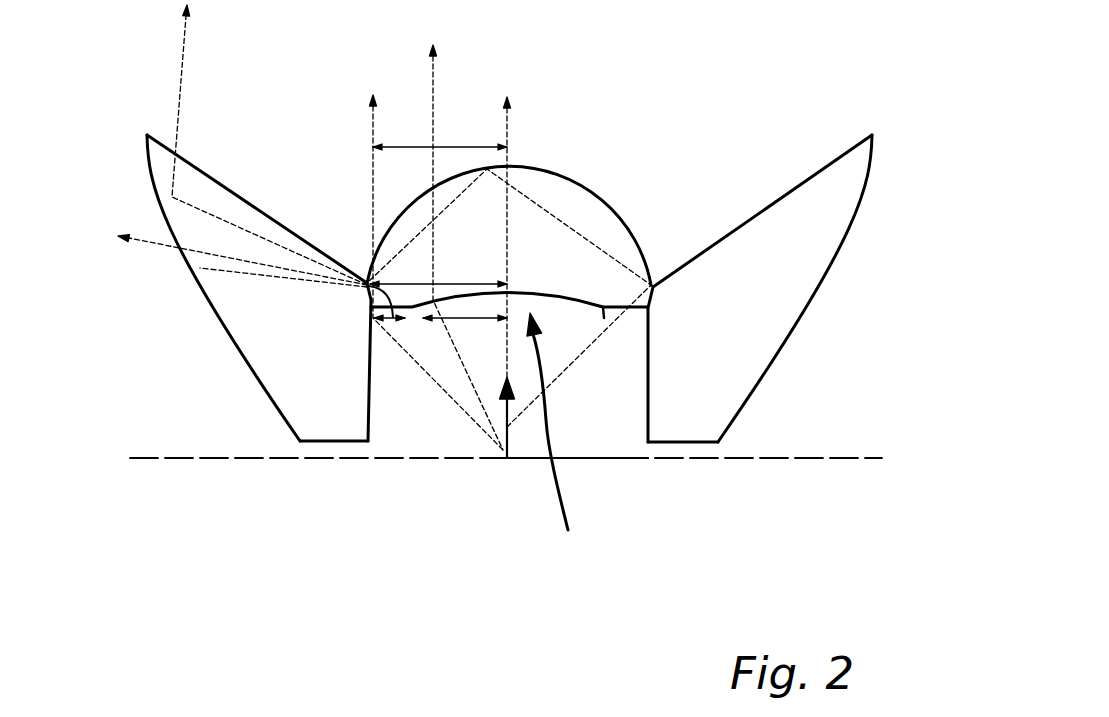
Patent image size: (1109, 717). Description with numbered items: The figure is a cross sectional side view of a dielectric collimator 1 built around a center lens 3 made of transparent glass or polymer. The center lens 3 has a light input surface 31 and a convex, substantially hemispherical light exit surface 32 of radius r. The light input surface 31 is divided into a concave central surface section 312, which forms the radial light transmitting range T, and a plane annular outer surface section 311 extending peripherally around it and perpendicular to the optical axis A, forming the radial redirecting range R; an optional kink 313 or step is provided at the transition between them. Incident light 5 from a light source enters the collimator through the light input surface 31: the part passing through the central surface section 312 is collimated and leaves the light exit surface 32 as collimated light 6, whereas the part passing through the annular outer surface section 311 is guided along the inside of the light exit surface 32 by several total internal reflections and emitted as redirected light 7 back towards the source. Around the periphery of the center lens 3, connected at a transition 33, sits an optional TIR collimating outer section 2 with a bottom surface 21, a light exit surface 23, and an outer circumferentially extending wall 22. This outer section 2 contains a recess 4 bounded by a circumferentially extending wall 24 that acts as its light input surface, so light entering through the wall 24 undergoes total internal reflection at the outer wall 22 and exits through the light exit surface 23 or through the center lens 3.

The dielectric collimator 1 is at (528, 325).
The TIR collimating outer section 2 is at (542, 329).
The bottom surface 21 is at (697, 443).
The outer circumferentially extending wall 22 is at (862, 186).
The light exit surface 23 is at (822, 167).
The circumferentially extending wall 24 is at (371, 404).
The center lens 3 is at (525, 353).
The light input surface 31 is at (525, 427).
The annular outer surface section 311 is at (633, 302).
The central surface section 312 is at (604, 310).
The kink 313 is at (607, 317).
The light exit surface 32 is at (640, 238).
The transition 33 is at (362, 300).
The recess 4 is at (425, 427).
The incident light 5 is at (450, 403).
The collimated light 6 is at (400, 130).
The redirected light 7 is at (605, 318).